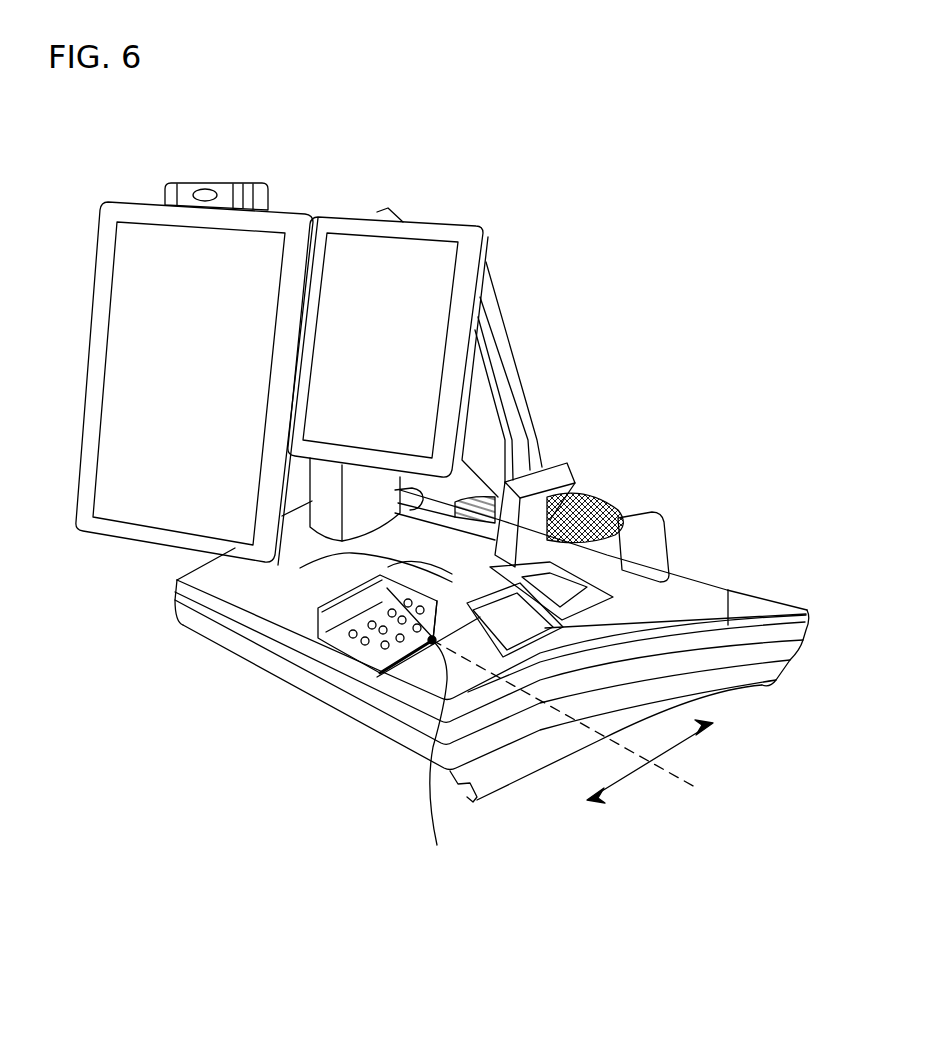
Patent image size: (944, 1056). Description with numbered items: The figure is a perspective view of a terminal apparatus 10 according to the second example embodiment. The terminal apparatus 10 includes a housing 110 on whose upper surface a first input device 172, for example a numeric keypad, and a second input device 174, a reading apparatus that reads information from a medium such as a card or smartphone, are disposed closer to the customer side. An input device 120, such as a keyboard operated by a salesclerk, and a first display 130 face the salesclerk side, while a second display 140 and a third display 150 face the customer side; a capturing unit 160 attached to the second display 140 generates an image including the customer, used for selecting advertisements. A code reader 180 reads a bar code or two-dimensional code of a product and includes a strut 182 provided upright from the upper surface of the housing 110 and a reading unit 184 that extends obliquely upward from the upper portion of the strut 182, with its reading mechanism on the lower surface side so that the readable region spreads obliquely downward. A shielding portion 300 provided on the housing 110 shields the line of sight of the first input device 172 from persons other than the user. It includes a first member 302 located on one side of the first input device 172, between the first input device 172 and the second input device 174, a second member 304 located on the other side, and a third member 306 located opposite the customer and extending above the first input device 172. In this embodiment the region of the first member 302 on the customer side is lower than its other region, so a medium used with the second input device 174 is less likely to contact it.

The terminal apparatus 10 is at (733, 120).
The housing 110 is at (637, 678).
The input device 120 is at (617, 520).
The first display 130 is at (507, 368).
The second display 140 is at (150, 218).
The third display 150 is at (423, 235).
The capturing unit 160 is at (205, 197).
The first input device 172 is at (372, 668).
The second input device 174 is at (430, 652).
The code reader 180 is at (722, 420).
The strut 182 is at (540, 537).
The reading unit 184 is at (575, 512).
The shielding portion 300 is at (124, 627).
The first member 302 is at (375, 668).
The second member 304 is at (318, 608).
The third member 306 is at (300, 568).